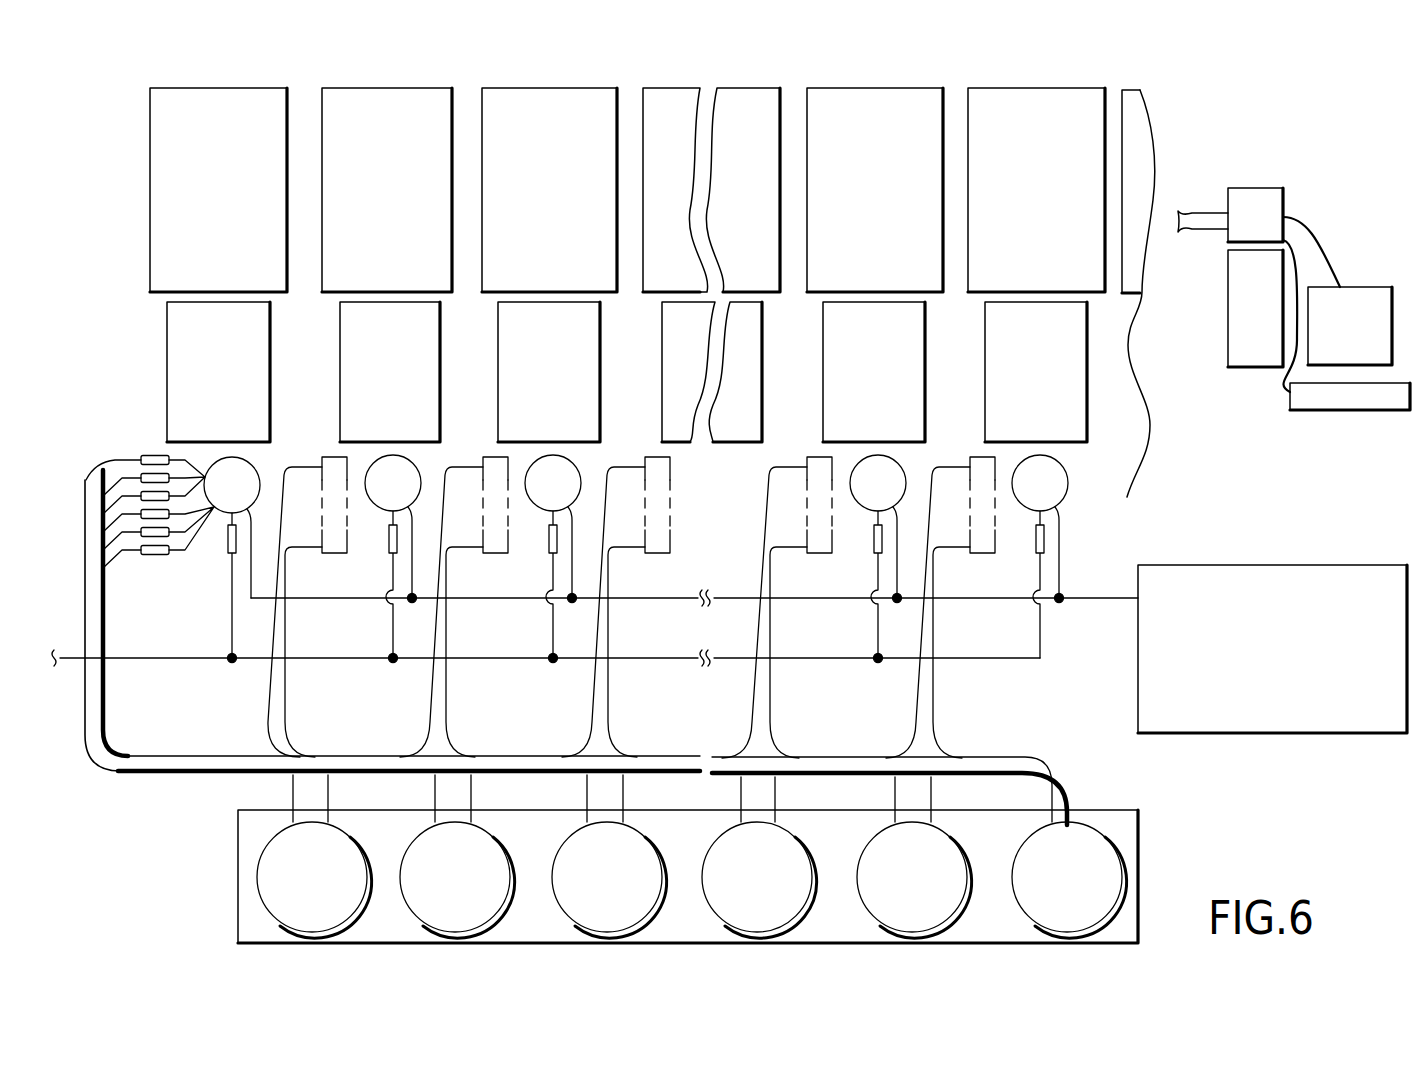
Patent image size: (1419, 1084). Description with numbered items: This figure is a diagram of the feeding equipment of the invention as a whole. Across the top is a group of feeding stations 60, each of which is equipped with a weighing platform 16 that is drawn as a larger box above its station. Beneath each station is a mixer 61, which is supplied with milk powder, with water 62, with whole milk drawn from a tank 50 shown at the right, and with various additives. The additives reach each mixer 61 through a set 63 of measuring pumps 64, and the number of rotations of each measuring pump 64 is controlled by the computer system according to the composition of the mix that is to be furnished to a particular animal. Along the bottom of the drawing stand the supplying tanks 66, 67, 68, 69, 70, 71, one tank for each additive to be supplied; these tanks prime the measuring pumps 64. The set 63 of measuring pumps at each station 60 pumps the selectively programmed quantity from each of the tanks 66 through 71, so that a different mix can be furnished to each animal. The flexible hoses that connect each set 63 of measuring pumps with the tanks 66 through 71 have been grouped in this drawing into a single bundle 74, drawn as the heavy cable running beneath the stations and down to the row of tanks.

The weighing platform 16 is at (204, 199).
The tank 50 is at (1268, 670).
The feeding station 60 is at (204, 388).
The mixer 61 is at (219, 498).
The water 62 is at (64, 659).
The set of measuring pumps 63 is at (150, 446).
The measuring pump 64 is at (141, 459).
The supplying tank 66 is at (297, 893).
The supplying tank 67 is at (440, 893).
The supplying tank 68 is at (592, 893).
The supplying tank 69 is at (742, 893).
The supplying tank 70 is at (897, 893).
The supplying tank 71 is at (1052, 893).
The bundle 74 is at (170, 762).